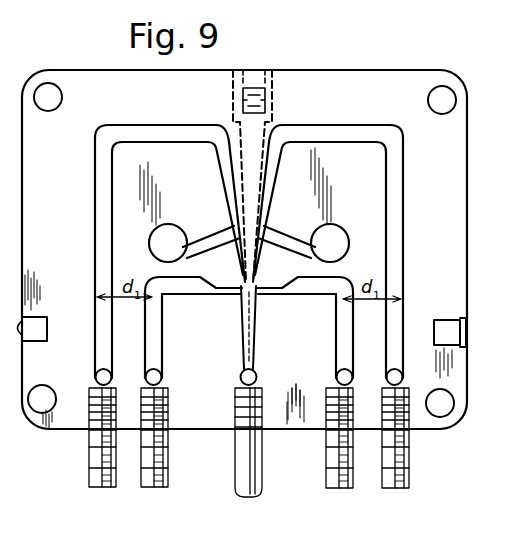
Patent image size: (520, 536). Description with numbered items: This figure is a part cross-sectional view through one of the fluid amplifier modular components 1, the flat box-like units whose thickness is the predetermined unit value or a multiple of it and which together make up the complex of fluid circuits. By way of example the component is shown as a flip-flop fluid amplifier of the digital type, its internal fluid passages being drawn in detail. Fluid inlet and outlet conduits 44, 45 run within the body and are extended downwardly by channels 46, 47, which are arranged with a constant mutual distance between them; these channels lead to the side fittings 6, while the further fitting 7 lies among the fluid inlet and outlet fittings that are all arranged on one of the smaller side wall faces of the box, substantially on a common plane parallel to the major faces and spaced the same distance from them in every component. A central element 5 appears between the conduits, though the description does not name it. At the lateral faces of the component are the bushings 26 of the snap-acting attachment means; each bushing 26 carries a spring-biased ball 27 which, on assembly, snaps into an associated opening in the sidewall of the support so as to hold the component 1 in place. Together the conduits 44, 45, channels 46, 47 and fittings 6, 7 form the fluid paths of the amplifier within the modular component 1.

The fluid amplifier modular component 1 is at (471, 160).
The blade 5 is at (258, 313).
The fluid inlet and outlet fitting 6 is at (110, 487).
The fluid inlet and outlet fitting 7 is at (262, 470).
The bushing 26 is at (447, 327).
The ball 27 is at (466, 332).
The fluid inlet and outlet conduit 44 is at (188, 298).
The fluid inlet and outlet conduit 45 is at (176, 146).
The channel 46 is at (152, 320).
The channel 47 is at (398, 262).